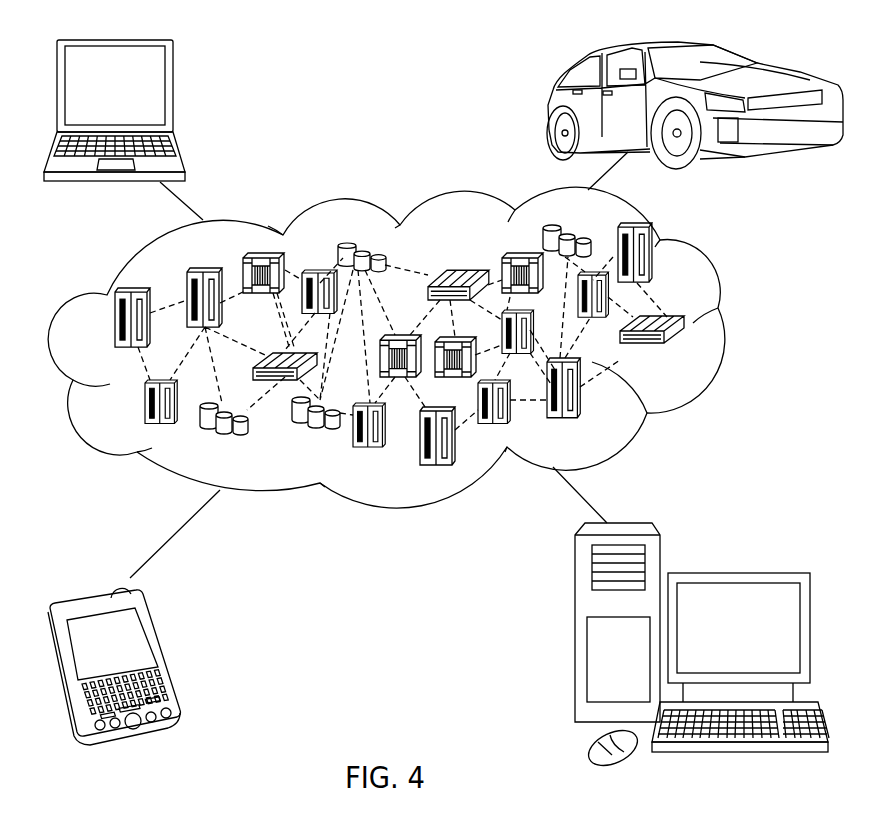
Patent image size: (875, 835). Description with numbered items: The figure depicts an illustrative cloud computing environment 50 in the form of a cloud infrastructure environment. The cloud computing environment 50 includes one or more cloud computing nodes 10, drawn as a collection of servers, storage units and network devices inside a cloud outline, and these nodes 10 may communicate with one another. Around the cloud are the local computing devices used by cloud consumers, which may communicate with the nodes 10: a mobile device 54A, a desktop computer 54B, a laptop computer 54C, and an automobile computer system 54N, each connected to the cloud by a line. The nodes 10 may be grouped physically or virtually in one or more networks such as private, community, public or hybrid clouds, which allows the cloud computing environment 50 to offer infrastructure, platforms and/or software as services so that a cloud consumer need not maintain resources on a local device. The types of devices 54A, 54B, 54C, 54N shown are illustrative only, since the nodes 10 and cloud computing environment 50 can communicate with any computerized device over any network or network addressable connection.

The cloud computing node 10 is at (695, 357).
The cloud computing environment 50 is at (737, 327).
The mobile device 54A is at (165, 653).
The desktop computer 54B is at (737, 573).
The laptop computer 54C is at (173, 92).
The automobile computer system 54N is at (547, 107).